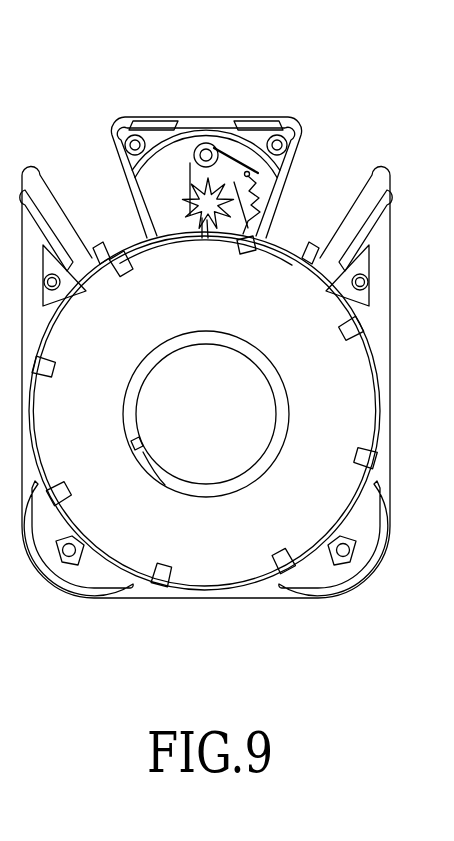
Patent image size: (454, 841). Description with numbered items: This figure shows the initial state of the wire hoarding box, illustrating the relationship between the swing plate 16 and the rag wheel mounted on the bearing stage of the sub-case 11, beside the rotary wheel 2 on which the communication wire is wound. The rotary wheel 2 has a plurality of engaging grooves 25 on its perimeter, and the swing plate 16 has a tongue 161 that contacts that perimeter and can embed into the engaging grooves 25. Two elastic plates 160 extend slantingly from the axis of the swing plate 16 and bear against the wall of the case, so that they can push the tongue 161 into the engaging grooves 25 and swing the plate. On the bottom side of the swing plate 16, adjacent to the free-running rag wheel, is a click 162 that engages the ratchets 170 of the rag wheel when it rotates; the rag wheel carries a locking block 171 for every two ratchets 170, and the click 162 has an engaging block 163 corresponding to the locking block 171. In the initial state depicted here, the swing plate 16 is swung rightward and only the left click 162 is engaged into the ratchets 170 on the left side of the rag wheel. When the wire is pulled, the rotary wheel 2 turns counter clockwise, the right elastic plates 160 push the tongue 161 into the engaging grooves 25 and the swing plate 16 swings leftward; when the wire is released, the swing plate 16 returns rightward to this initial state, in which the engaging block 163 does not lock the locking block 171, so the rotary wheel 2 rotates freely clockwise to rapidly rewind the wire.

The rotary wheel 2 is at (223, 568).
The sub-case 11 is at (148, 593).
The swing plate 16 is at (209, 172).
The elastic plates 160 is at (192, 172).
The click 162 is at (197, 180).
The engaging block 163 is at (188, 208).
The ratchets 170 is at (192, 205).
The locking block 171 is at (188, 187).
The tongue 161 is at (240, 243).
The engaging grooves 25 is at (246, 256).